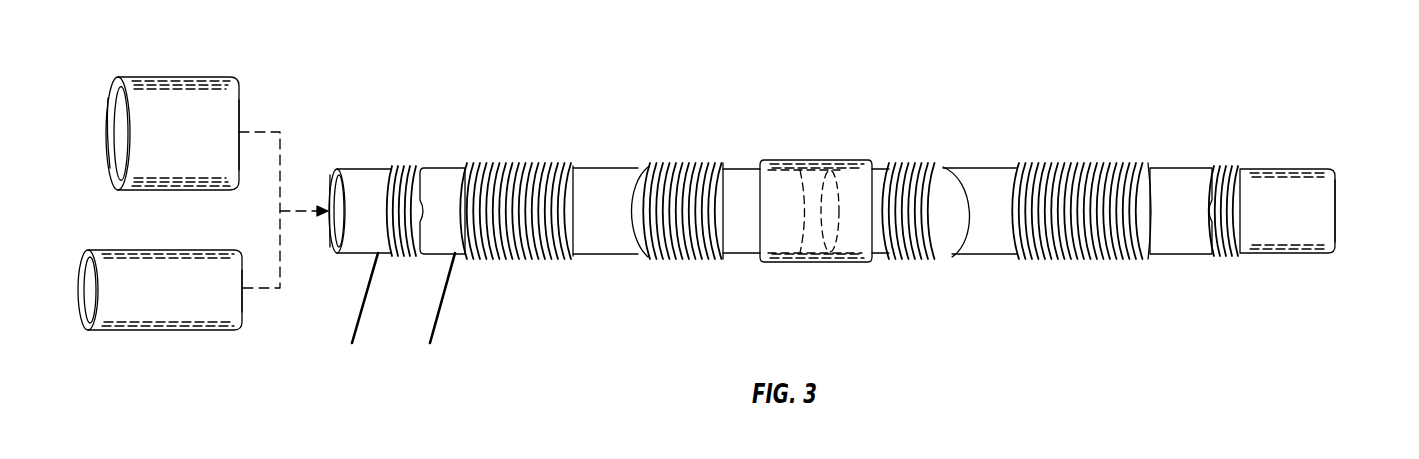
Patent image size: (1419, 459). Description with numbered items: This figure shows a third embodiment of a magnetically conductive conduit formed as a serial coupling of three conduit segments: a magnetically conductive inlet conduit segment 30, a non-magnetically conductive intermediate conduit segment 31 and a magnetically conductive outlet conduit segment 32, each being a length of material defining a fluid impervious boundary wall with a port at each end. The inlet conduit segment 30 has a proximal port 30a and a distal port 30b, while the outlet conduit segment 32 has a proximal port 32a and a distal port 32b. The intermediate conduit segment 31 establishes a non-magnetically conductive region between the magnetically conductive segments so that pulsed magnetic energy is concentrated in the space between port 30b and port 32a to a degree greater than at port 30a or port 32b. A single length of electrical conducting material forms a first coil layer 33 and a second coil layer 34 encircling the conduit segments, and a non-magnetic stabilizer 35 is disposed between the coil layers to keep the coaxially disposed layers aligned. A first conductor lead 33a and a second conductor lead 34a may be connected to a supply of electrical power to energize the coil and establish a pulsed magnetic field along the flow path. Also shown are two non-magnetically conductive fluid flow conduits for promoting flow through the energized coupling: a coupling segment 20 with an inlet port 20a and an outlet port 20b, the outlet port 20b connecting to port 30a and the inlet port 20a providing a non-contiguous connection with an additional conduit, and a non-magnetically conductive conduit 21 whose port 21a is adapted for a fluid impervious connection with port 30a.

The coupling segment 20 is at (194, 142).
The inlet port 20a is at (118, 112).
The outlet port 20b is at (238, 113).
The non-magnetically conductive conduit 21 is at (177, 301).
The port 21a is at (243, 303).
The magnetically conductive inlet conduit segment 30 is at (377, 221).
The port 30a is at (337, 170).
The port 30b is at (804, 222).
The non-magnetically conductive intermediate conduit segment 31 is at (818, 167).
The magnetically conductive outlet conduit segment 32 is at (1306, 221).
The port 32a is at (835, 240).
The port 32b is at (1333, 170).
The first coil layer 33 is at (680, 164).
The first conductor lead 33a is at (357, 318).
The second coil layer 34 is at (520, 162).
The second conductor lead 34a is at (440, 318).
The non-magnetic stabilizer 35 is at (462, 221).